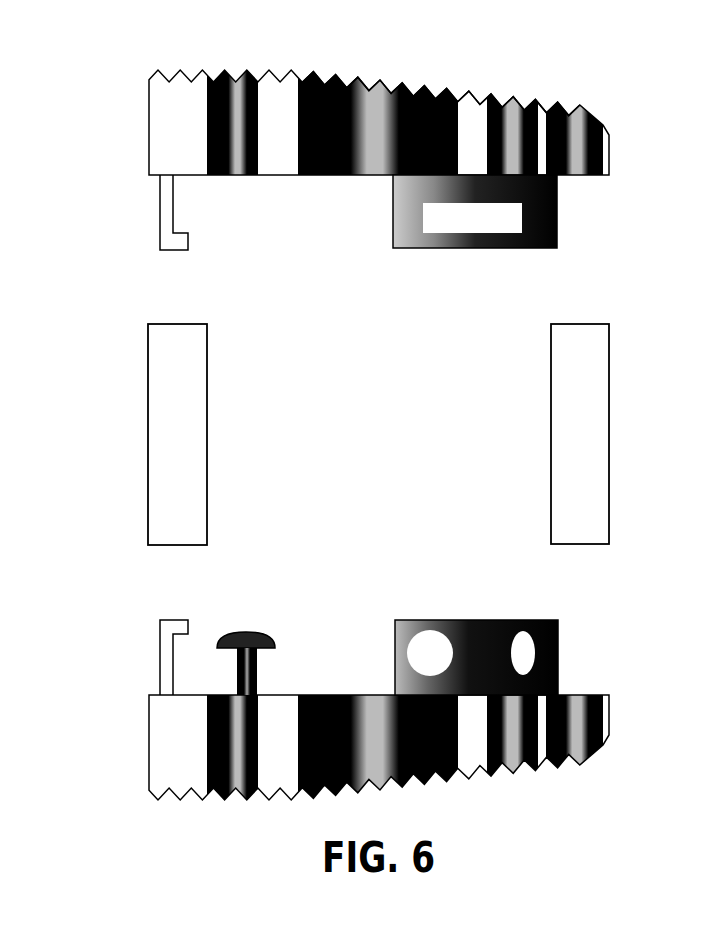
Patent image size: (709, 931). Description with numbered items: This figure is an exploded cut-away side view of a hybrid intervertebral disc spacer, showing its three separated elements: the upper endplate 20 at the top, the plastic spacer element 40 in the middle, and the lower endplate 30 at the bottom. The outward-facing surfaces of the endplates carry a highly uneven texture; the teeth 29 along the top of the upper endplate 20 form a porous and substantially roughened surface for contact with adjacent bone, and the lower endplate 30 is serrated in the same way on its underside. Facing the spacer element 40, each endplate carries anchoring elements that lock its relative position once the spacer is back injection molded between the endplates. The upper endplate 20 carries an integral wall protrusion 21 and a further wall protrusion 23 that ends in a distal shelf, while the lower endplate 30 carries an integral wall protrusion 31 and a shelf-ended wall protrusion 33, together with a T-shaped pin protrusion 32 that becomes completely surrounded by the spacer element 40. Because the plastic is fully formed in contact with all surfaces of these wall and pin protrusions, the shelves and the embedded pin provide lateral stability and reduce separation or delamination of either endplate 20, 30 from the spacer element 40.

The upper endplate 20 is at (590, 168).
The teeth 29 is at (492, 96).
The wall protrusion 23 is at (167, 228).
The wall protrusion 21 is at (410, 227).
The spacer element 40 is at (180, 434).
The lower endplate 30 is at (577, 733).
The wall protrusion 33 is at (170, 628).
The pin protrusion 32 is at (250, 632).
The wall protrusion 31 is at (473, 625).